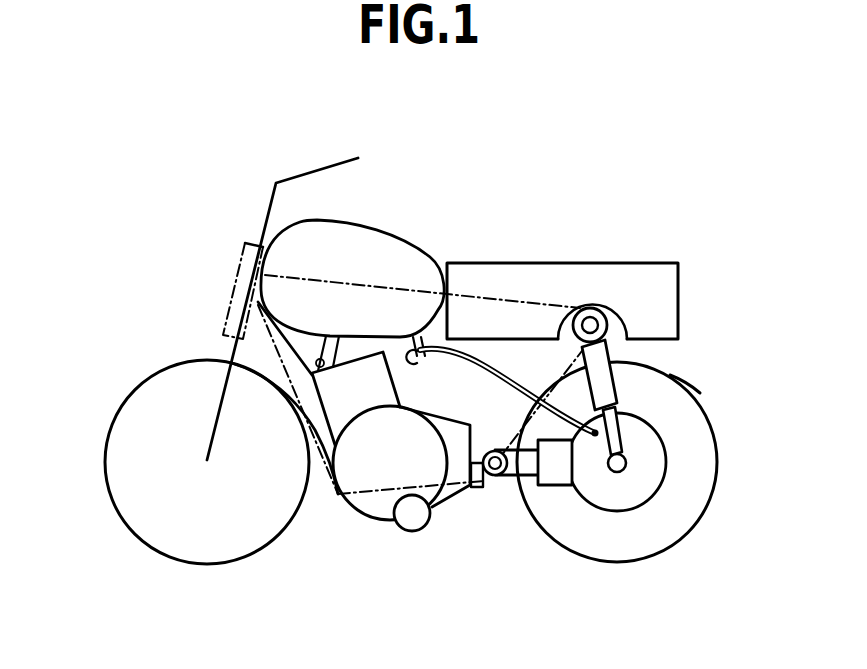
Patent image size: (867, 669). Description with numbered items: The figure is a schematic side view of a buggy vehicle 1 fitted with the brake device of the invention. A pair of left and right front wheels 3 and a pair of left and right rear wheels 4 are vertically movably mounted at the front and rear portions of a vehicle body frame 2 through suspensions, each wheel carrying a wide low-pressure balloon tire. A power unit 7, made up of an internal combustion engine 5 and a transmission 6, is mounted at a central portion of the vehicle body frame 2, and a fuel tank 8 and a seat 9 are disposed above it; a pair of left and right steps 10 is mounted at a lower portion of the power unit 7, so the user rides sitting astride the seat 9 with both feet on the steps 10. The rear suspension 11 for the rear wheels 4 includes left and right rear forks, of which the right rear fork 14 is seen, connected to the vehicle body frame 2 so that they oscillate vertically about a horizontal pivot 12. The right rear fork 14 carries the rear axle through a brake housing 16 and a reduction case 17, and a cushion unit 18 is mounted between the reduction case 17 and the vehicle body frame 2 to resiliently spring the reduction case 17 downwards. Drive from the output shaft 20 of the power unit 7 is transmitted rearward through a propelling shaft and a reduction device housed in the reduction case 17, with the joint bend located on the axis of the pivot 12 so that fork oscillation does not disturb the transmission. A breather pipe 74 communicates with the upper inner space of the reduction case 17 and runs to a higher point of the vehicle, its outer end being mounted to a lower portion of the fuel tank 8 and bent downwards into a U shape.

The buggy vehicle 1 is at (240, 210).
The vehicle body frame 2 is at (488, 297).
The front wheels 3 is at (128, 396).
The rear wheels 4 is at (717, 426).
The internal combustion engine 5 is at (350, 373).
The transmission 6 is at (437, 503).
The power unit 7 is at (345, 513).
The fuel tank 8 is at (376, 247).
The seat 9 is at (578, 272).
The steps 10 is at (412, 524).
The rear suspension 11 is at (503, 502).
The pivot 12 is at (496, 451).
The right rear fork 14 is at (530, 482).
The brake housing 16 is at (572, 470).
The reduction case 17 is at (658, 484).
The cushion unit 18 is at (670, 375).
The output shaft 20 is at (477, 487).
The breather pipe 74 is at (480, 369).